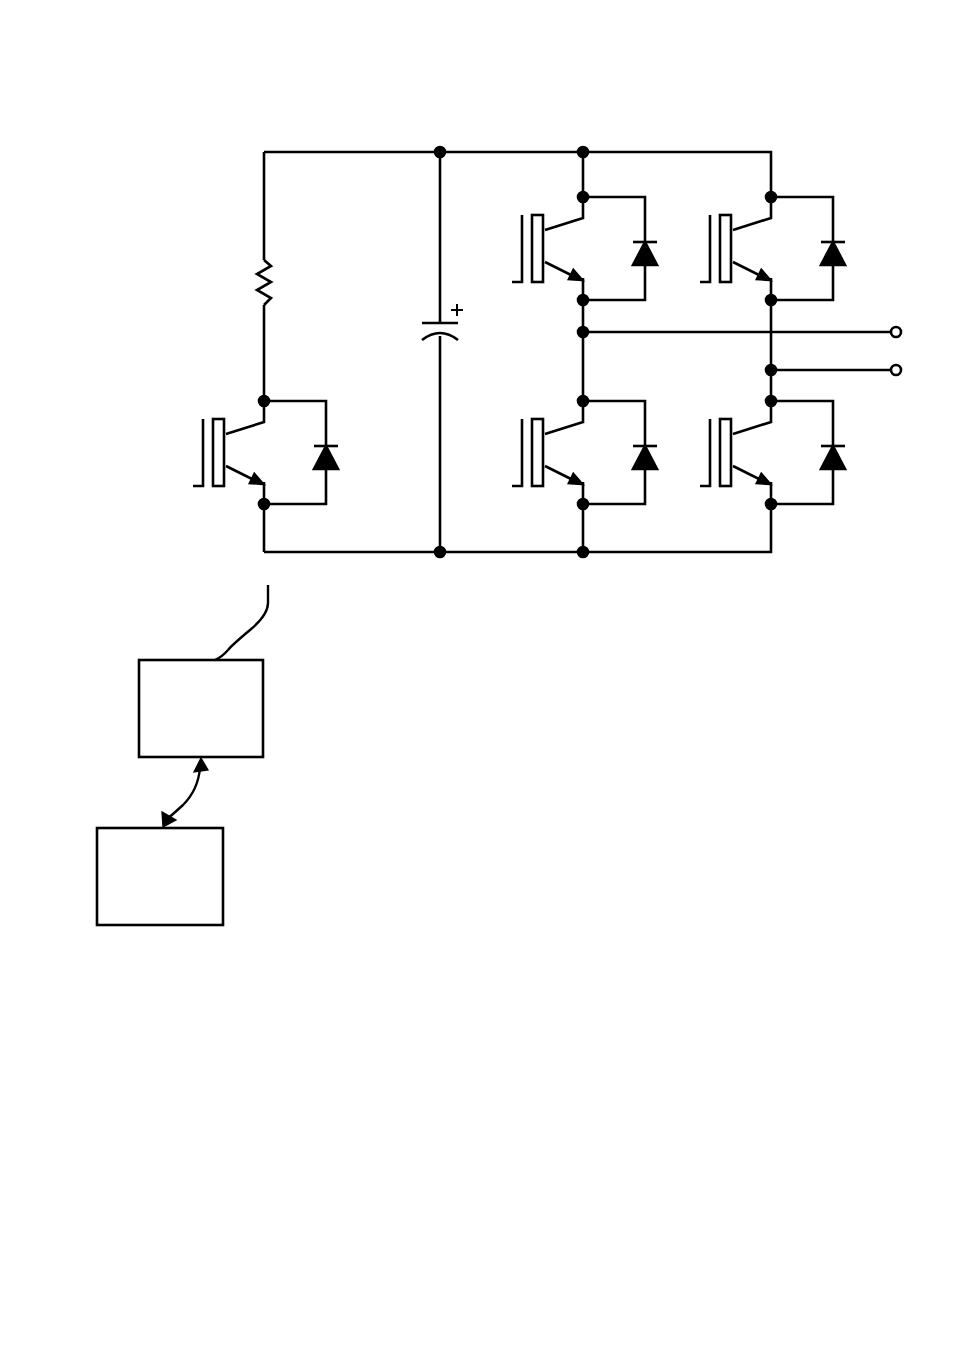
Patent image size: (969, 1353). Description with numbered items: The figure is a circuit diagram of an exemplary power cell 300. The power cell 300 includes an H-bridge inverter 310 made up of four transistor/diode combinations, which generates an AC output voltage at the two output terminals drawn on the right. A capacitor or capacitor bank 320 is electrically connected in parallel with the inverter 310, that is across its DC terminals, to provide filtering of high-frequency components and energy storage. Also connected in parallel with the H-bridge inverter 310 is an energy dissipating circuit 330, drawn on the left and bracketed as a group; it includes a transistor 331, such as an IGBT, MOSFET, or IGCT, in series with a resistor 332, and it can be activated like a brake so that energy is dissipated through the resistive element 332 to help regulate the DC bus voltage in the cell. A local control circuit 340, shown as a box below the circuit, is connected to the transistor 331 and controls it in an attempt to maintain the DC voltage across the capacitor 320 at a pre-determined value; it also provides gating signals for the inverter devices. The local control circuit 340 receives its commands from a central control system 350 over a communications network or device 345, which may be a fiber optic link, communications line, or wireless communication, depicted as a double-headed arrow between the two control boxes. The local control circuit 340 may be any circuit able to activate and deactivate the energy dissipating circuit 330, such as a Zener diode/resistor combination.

The power cell 300 is at (242, 56).
The H-bridge inverter 310 is at (853, 633).
The capacitor bank 320 is at (416, 323).
The energy dissipating circuit 330 is at (140, 258).
The transistor 331 is at (213, 402).
The resistor 332 is at (250, 270).
The local control circuit 340 is at (136, 686).
The communications network or device 345 is at (197, 790).
The central control system 350 is at (94, 855).